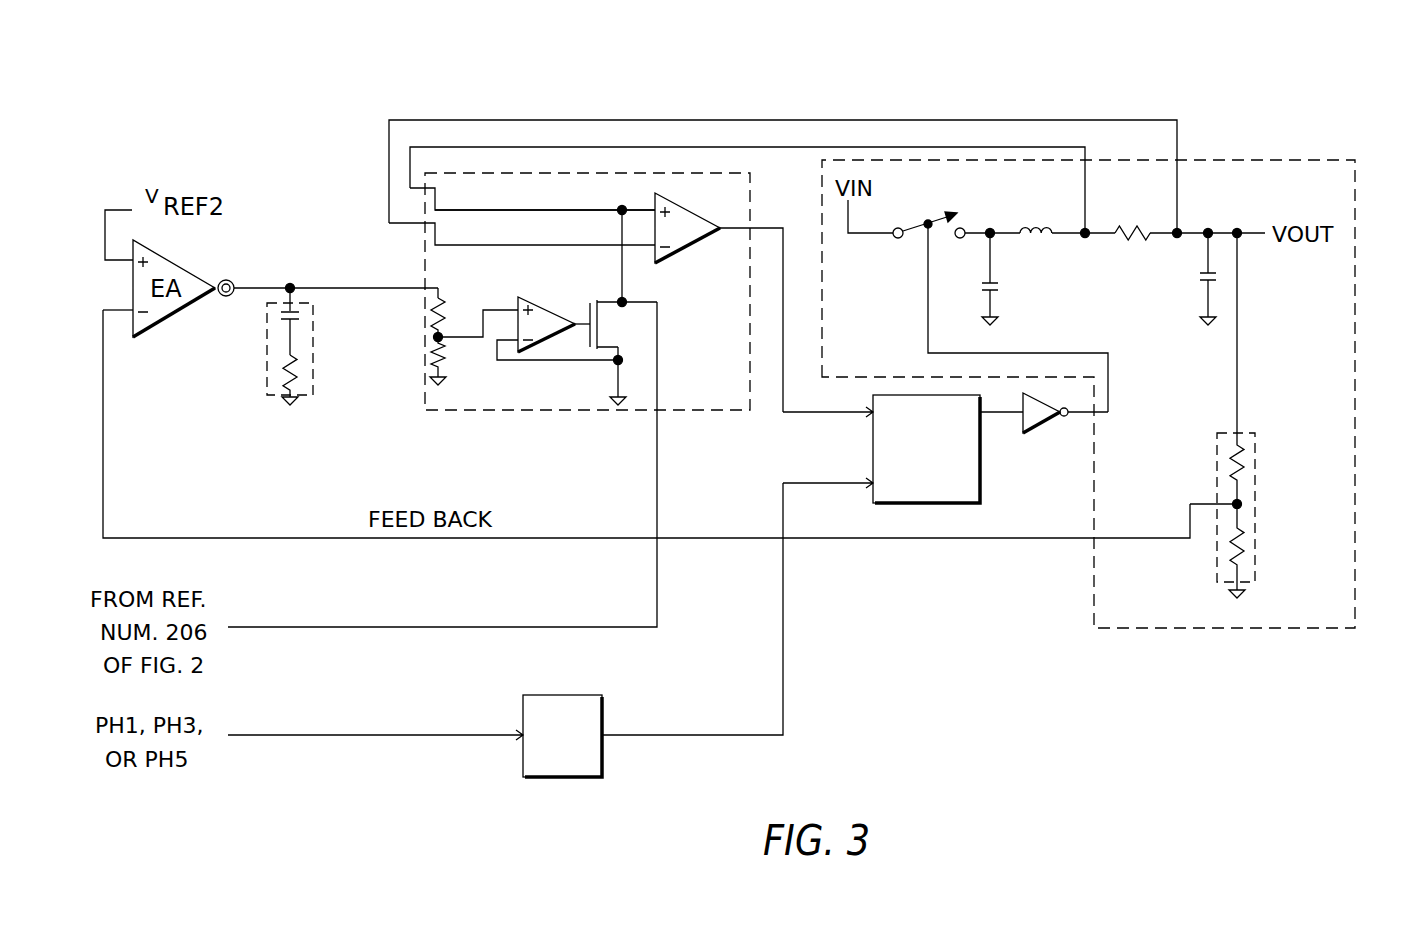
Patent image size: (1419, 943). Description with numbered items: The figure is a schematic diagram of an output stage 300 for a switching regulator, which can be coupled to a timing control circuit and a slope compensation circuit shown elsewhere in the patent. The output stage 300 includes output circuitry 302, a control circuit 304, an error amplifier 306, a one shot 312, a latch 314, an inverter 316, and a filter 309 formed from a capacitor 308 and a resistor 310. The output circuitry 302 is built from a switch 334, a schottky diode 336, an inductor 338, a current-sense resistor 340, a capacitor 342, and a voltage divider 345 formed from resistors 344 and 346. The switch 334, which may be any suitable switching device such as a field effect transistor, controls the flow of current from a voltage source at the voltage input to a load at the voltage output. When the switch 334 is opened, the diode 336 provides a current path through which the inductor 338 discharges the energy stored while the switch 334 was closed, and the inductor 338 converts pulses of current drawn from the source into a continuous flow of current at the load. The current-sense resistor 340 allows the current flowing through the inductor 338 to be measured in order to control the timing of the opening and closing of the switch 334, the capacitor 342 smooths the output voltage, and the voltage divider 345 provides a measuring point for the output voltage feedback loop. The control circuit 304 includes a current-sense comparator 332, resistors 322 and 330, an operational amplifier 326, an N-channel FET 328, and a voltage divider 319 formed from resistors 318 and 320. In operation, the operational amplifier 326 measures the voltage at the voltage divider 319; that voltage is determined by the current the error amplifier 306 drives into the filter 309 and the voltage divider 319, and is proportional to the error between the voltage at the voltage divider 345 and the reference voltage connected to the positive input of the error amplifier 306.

The output stage 300 is at (1298, 84).
The output circuitry 302 is at (1168, 630).
The control circuit 304 is at (750, 212).
The error amplifier 306 is at (200, 274).
The capacitor 308 is at (300, 312).
The filter 309 is at (267, 330).
The resistor 310 is at (298, 362).
The one shot 312 is at (548, 695).
The latch 314 is at (895, 503).
The inverter 316 is at (1043, 434).
The resistor 318 is at (451, 305).
The voltage divider 319 is at (477, 326).
The resistor 320 is at (444, 349).
The resistor 322 is at (547, 214).
The operational amplifier 326 is at (551, 308).
The N-channel FET 328 is at (616, 304).
The resistor 330 is at (615, 367).
The current-sense comparator 332 is at (677, 203).
The switch 334 is at (937, 216).
The schottky diode 336 is at (992, 289).
The inductor 338 is at (1038, 238).
The current-sense resistor 340 is at (1128, 240).
The capacitor 342 is at (1206, 275).
The resistor 344 is at (1245, 457).
The voltage divider 345 is at (1217, 443).
The resistor 346 is at (1245, 543).